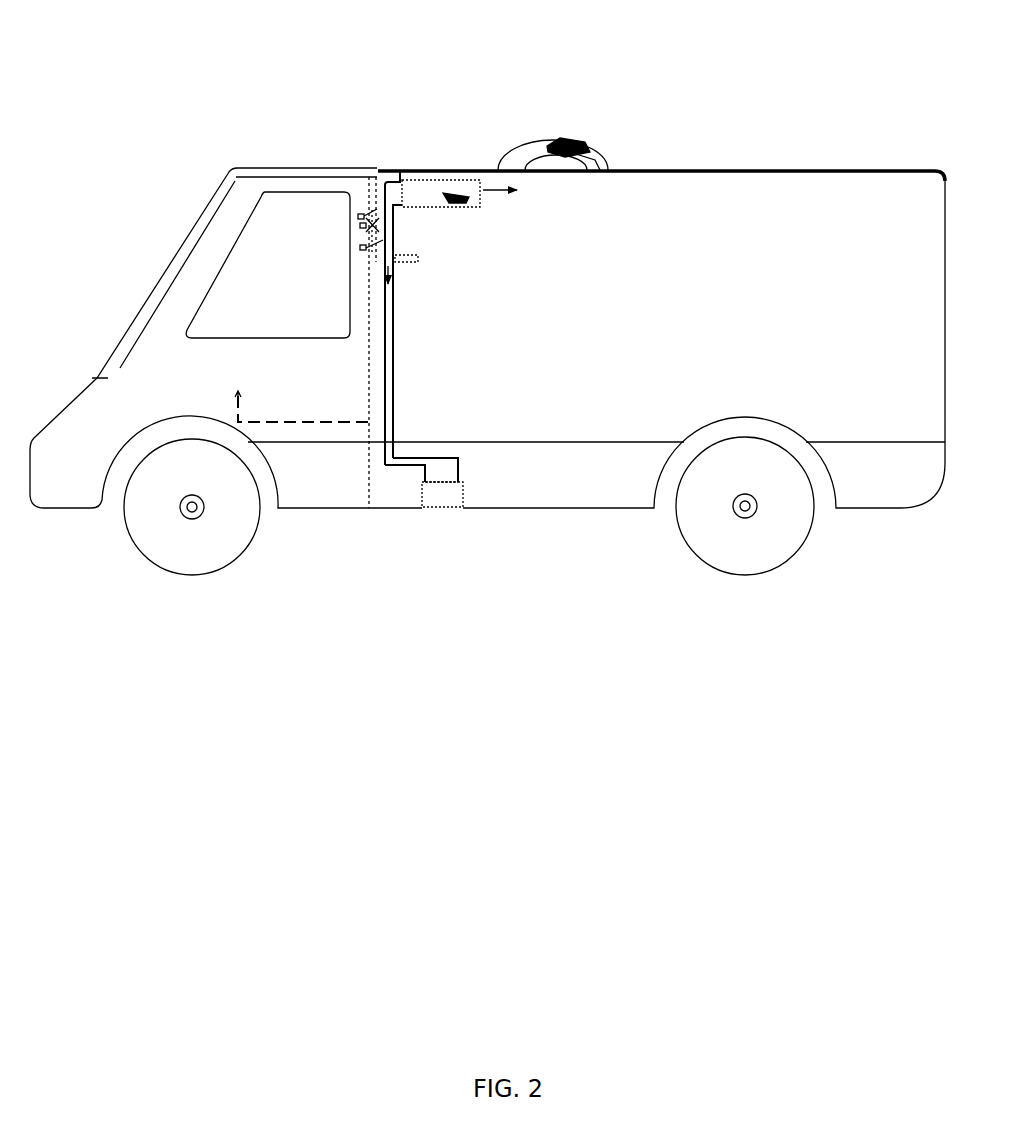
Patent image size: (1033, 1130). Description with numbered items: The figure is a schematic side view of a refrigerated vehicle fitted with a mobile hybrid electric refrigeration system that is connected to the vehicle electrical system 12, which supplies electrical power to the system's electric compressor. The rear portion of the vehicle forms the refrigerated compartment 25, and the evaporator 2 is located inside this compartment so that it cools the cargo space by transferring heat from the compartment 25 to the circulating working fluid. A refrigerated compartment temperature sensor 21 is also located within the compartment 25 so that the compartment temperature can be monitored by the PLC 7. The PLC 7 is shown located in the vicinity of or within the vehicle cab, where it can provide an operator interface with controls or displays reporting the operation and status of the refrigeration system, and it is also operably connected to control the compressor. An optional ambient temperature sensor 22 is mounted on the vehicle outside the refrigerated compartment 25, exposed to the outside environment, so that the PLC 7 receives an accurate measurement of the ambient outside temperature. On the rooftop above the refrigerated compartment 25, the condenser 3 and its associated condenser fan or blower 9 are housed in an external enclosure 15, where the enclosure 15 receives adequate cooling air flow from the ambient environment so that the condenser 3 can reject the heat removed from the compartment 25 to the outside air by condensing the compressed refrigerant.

The evaporator 2 is at (432, 222).
The condenser 3 is at (594, 150).
The PLC 7 is at (294, 399).
The electric fan or blower 9 is at (557, 131).
The vehicle electrical system 12 is at (446, 504).
The external enclosure 15 is at (481, 131).
The refrigerated compartment temperature sensor 21 is at (412, 270).
The ambient temperature sensor 22 is at (360, 204).
The refrigerated compartment 25 is at (661, 344).